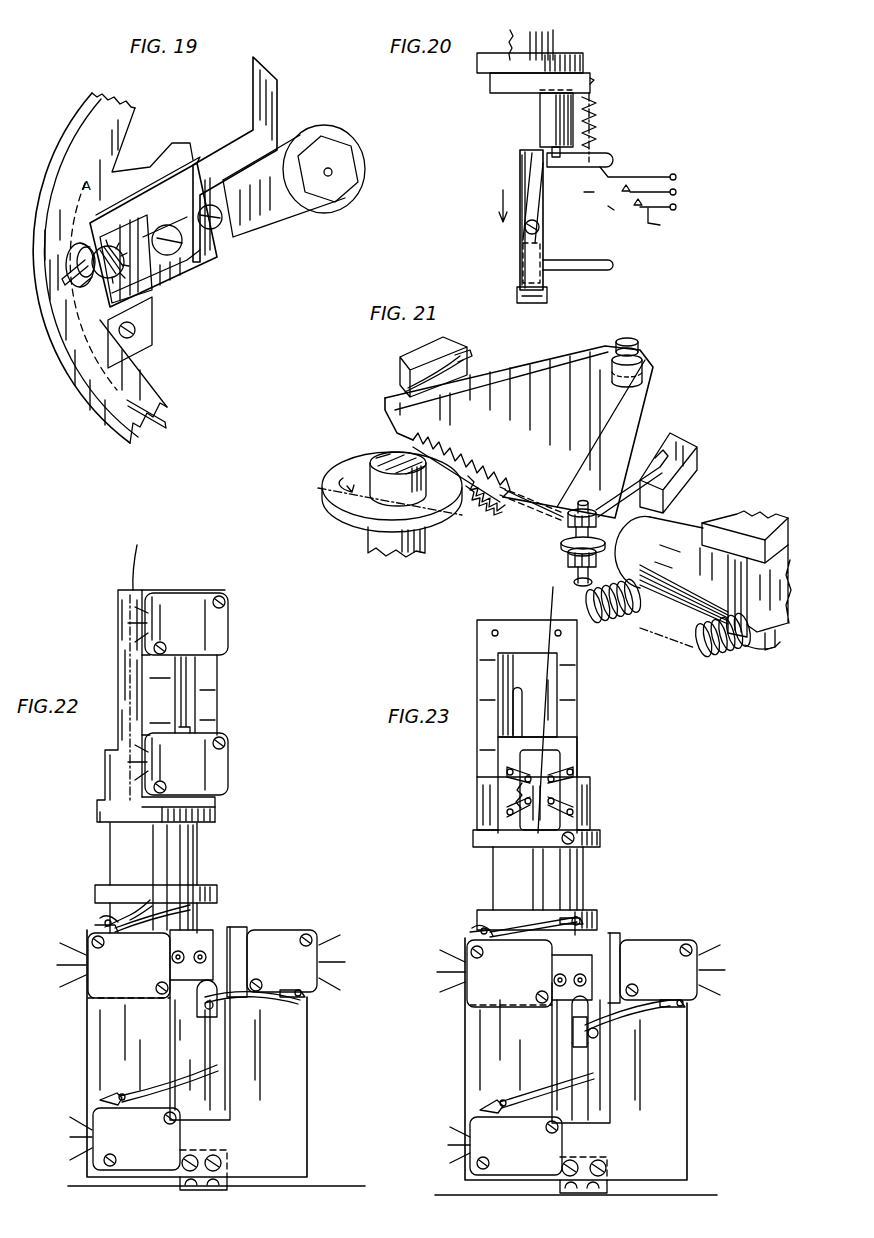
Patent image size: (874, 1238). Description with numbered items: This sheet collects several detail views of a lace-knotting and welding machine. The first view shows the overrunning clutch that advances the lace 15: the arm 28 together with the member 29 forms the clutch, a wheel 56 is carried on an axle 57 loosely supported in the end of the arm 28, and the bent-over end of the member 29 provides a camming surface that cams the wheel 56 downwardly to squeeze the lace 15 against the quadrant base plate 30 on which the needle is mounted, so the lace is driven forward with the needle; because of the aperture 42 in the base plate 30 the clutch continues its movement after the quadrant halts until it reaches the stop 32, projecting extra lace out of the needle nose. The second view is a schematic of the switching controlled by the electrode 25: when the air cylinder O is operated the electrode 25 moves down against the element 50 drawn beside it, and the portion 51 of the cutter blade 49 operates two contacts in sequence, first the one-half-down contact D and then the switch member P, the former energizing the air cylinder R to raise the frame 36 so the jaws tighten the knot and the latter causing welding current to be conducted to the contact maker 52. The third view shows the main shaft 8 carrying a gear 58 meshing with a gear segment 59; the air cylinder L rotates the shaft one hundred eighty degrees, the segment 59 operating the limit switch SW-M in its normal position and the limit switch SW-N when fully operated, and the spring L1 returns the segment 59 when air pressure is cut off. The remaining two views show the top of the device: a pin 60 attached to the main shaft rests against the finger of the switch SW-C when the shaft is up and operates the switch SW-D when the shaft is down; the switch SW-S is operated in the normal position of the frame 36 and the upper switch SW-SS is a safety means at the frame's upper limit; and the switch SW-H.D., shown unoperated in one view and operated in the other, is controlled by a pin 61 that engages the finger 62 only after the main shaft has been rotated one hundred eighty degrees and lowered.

In FIG. 19, the lace 15 is at (167, 419).
In FIG. 19, the arm 28 is at (160, 197).
In FIG. 19, the member 29 is at (217, 163).
In FIG. 19, the quadrant base plate 30 is at (90, 393).
In FIG. 19, the stop 32 is at (140, 337).
In FIG. 19, the aperture 42 is at (87, 230).
In FIG. 19, the wheel 56 is at (67, 243).
In FIG. 19, the axle 57 is at (63, 283).
In FIG. 20, the electrode 25 is at (520, 173).
In FIG. 20, the cutter blade 49 is at (537, 215).
In FIG. 20, the spring 50 is at (593, 118).
In FIG. 20, the portion of cutter blade 51 is at (603, 150).
In FIG. 20, the contact maker 52 is at (580, 260).
In FIG. 20, the air cylinder O is at (545, 112).
In FIG. 20, the switch member P is at (665, 230).
In FIG. 20, the ½D (one half down) contact D is at (599, 194).
In FIG. 21, the main shaft 8 is at (370, 535).
In FIG. 21, the gear 58 is at (337, 510).
In FIG. 21, the gear segment 59 is at (507, 507).
In FIG. 21, the limit switch N SW-N is at (401, 367).
In FIG. 21, the limit switch M SW-M is at (693, 473).
In FIG. 21, the air cylinder L is at (680, 543).
In FIG. 21, the spring L1 is at (610, 620).
In FIG. 22, the air cylinder R is at (190, 857).
In FIG. 23, the air cylinder R is at (492, 872).
In FIG. 22, the finger 62 is at (148, 893).
In FIG. 23, the finger 62 is at (522, 910).
In FIG. 23, the pin 61 is at (580, 895).
In FIG. 22, the pin 60 is at (213, 1007).
In FIG. 23, the pin 60 is at (577, 1033).
In FIG. 23, the frame 36 is at (568, 753).
In FIG. 22, the switch SS SW-SS is at (227, 630).
In FIG. 22, the switch S SW-S is at (220, 770).
In FIG. 22, the switch HD SW-H.D. is at (80, 938).
In FIG. 23, the switch HD SW-H.D. is at (463, 950).
In FIG. 22, the limit switch C SW-C is at (296, 951).
In FIG. 23, the limit switch C SW-C is at (653, 953).
In FIG. 22, the switch D SW-D is at (93, 1110).
In FIG. 23, the switch D SW-D is at (470, 1143).